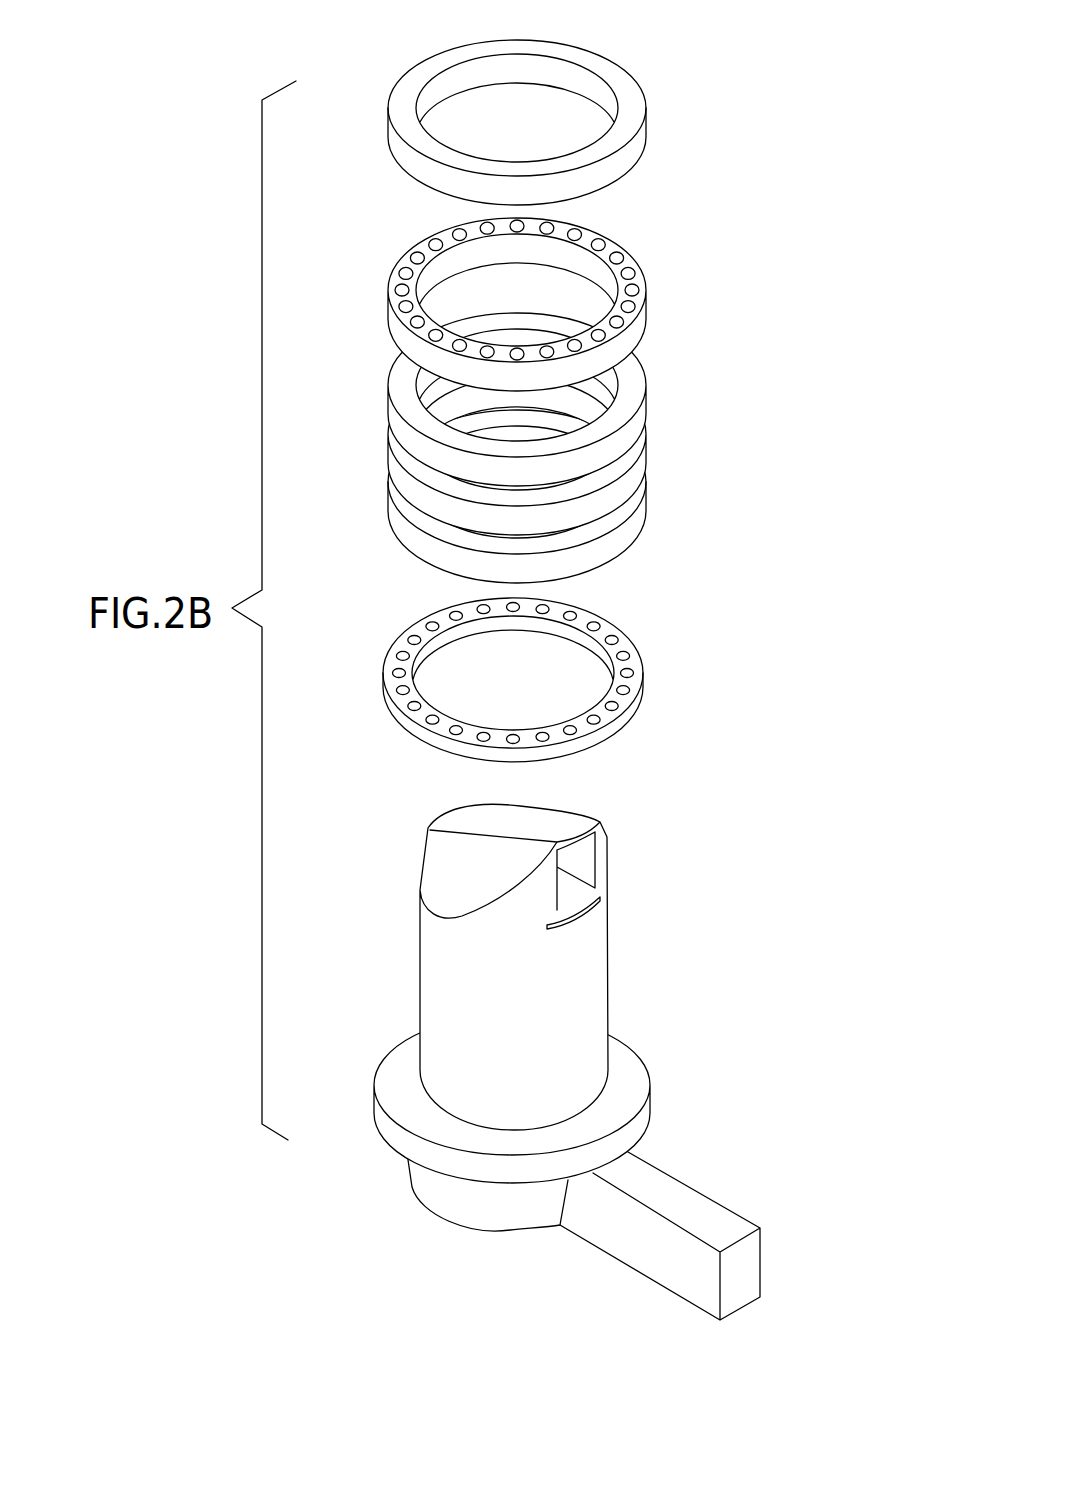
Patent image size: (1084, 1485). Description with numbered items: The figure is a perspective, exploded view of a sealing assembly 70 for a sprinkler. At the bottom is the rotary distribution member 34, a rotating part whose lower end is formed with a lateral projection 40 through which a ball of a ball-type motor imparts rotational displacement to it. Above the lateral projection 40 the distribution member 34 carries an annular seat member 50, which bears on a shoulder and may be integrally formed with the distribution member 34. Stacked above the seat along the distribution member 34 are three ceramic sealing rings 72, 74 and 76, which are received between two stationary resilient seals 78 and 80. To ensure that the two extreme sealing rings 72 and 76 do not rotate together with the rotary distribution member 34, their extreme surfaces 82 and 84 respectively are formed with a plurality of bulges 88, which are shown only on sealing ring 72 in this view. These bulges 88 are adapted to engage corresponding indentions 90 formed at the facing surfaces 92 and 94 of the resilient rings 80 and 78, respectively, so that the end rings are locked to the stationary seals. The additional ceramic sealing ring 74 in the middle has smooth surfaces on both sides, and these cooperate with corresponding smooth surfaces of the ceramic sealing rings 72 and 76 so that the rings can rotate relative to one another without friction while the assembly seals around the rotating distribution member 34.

The rotary distribution member 34 is at (572, 1006).
The lateral projection 40 is at (675, 1205).
The annular seat member 50 is at (648, 1118).
The sealing assembly 70 is at (787, 713).
The ceramic sealing ring 72 is at (622, 347).
The ceramic sealing ring 74 is at (622, 440).
The ceramic sealing ring 76 is at (559, 502).
The stationary resilient seal 78 is at (529, 122).
The stationary resilient seal 80 is at (537, 673).
The extreme surface 82 is at (517, 299).
The extreme surface 84 is at (618, 563).
The bulges 88 is at (415, 251).
The indentions 90 is at (432, 625).
The facing surface 92 is at (410, 700).
The facing surface 94 is at (448, 192).